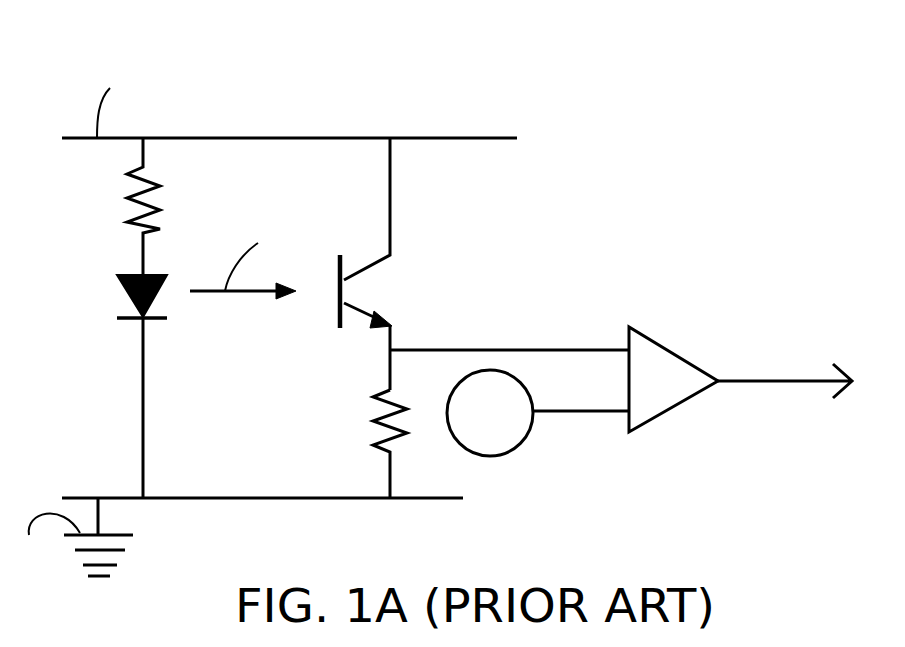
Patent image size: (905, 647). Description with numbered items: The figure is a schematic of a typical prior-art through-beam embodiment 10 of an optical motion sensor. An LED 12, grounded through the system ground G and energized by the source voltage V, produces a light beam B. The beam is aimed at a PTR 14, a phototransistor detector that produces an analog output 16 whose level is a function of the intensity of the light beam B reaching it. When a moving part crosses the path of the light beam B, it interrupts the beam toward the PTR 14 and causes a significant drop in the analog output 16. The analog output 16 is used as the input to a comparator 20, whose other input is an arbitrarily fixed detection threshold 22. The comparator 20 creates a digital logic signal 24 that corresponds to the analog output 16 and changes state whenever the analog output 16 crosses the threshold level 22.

The through-beam embodiment 10 is at (518, 63).
The LED 12 is at (128, 273).
The PTR 14 is at (348, 292).
The analog output 16 is at (520, 348).
The comparator 20 is at (667, 355).
The detection threshold 22 is at (596, 406).
The digital logic signal 24 is at (773, 378).